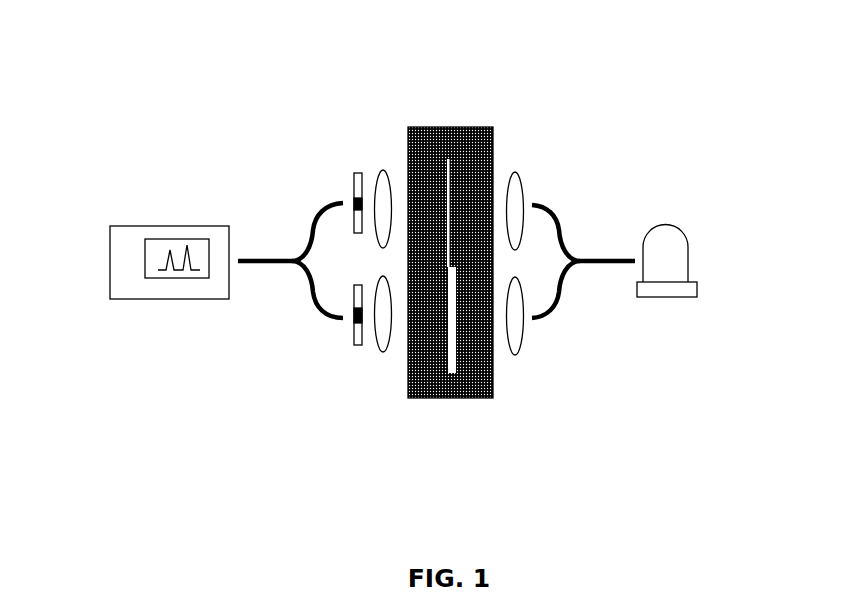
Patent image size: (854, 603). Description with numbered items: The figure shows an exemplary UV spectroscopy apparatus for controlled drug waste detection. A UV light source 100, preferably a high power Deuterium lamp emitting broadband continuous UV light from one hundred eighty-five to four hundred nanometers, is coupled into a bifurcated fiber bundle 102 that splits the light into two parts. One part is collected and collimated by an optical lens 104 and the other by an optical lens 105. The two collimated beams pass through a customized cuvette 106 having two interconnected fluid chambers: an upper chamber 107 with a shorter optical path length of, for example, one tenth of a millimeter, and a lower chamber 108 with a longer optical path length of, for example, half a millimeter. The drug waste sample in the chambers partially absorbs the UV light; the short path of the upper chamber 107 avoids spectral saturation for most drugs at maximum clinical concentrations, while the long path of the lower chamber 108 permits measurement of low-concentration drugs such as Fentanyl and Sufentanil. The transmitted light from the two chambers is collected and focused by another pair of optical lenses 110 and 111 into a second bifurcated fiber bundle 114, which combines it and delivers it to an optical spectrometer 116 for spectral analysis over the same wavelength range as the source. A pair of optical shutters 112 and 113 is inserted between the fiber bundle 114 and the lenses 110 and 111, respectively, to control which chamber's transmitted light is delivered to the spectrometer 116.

The UV light source 100 is at (690, 262).
The bifurcated fiber bundle 102 is at (565, 220).
The optical lens 104 is at (515, 172).
The optical lens 105 is at (515, 355).
The customized cuvette 106 is at (450, 127).
The upper chamber 107 is at (448, 213).
The lower chamber 108 is at (448, 320).
The optical lens 110 is at (383, 170).
The optical lens 111 is at (382, 353).
The optical shutter 112 is at (353, 185).
The optical shutter 113 is at (352, 337).
The bifurcated fiber bundle 114 is at (265, 260).
The optical spectrometer 116 is at (170, 300).